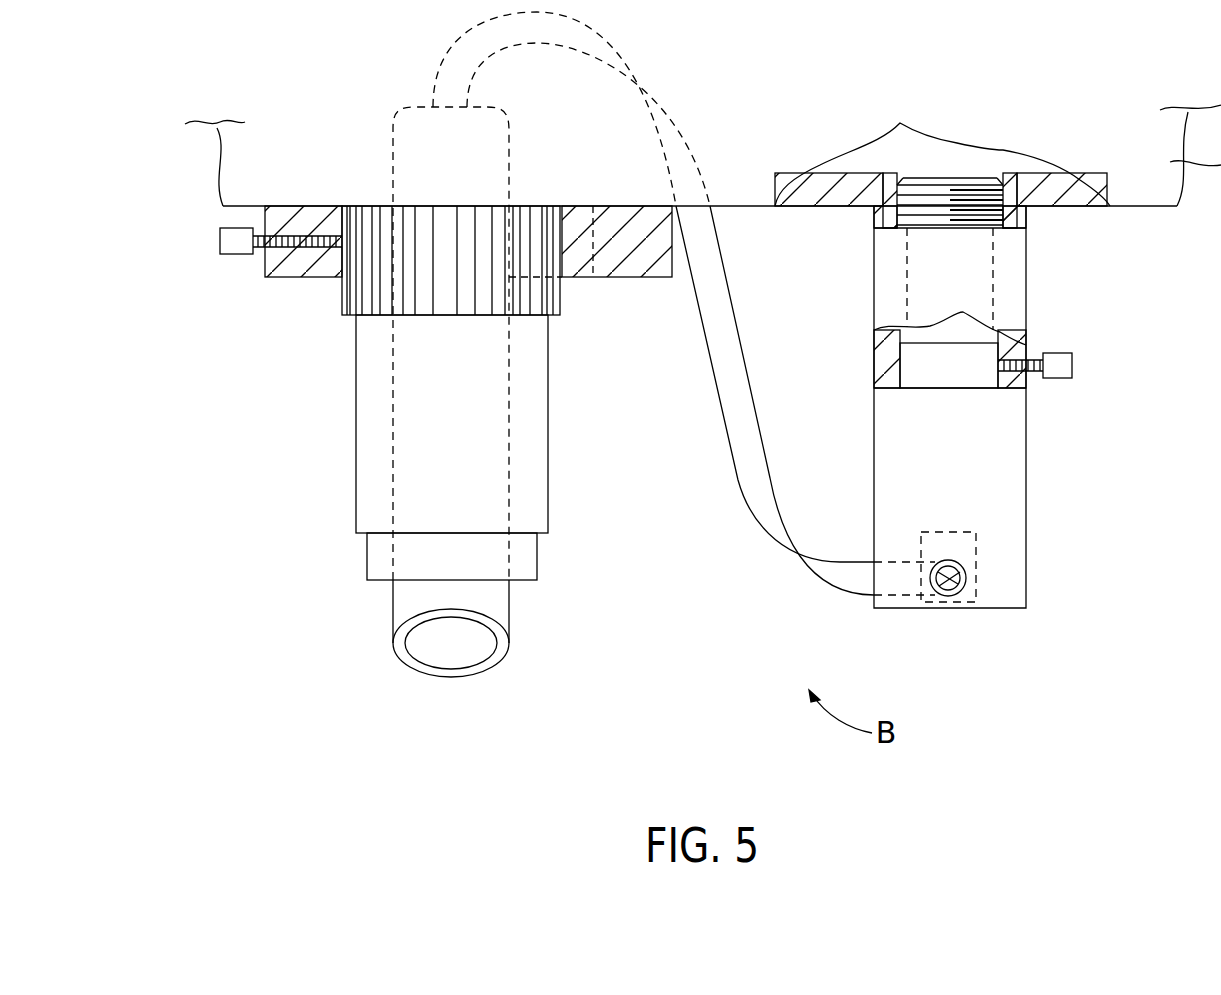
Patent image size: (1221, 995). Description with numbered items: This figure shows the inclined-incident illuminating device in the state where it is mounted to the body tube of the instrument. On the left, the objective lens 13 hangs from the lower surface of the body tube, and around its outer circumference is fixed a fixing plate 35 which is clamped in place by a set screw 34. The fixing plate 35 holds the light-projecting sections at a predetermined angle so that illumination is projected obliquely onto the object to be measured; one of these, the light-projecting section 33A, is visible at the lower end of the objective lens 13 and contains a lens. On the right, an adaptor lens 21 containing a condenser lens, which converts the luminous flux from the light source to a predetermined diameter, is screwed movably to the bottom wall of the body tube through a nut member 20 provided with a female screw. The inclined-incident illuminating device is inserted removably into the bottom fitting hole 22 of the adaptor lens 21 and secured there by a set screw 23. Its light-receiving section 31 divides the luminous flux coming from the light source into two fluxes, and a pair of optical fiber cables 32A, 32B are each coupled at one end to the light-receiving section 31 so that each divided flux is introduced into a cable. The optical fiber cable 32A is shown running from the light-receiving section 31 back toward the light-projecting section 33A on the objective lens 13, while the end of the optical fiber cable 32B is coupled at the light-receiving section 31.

The objective lens 13 is at (370, 462).
The nut member 20 is at (1026, 220).
The adaptor lens 21 is at (1013, 288).
The bottom fitting hole 22 is at (874, 365).
The set screw 23 is at (1072, 365).
The light-receiving section 31 is at (1013, 490).
The optical fiber cable 32A is at (760, 525).
The optical fiber cable 32B is at (967, 577).
The light-projecting section 33A is at (509, 612).
The set screw 34 is at (233, 254).
The fixing plate 35 is at (629, 278).